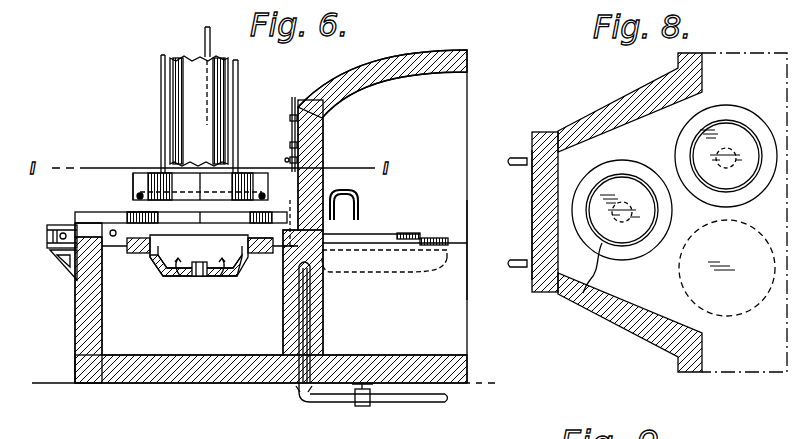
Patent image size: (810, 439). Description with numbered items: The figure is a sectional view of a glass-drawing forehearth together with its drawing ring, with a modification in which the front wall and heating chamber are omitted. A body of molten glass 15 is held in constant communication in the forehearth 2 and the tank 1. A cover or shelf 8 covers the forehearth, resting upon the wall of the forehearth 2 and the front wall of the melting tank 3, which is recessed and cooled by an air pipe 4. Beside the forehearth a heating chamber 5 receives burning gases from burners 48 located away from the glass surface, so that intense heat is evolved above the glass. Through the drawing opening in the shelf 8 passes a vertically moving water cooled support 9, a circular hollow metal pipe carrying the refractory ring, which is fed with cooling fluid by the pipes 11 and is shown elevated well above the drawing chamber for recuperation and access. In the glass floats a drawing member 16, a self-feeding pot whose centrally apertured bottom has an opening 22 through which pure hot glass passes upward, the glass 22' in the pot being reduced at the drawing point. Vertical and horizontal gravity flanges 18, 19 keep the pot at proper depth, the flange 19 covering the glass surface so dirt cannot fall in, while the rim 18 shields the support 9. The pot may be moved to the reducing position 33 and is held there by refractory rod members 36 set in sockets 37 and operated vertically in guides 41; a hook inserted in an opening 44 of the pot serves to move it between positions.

In FIG. 6, the tank 1 is at (462, 318).
In FIG. 6, the body of molten glass 15 is at (460, 292).
In FIG. 6, the forehearth 2 is at (110, 330).
In FIG. 6, the cover or shelf 8 is at (85, 212).
In FIG. 6, the burner 48 is at (63, 225).
In FIG. 6, the heating chamber 5 is at (53, 250).
In FIG. 6, the water cooled support 9 is at (266, 192).
In FIG. 6, the support 11 is at (240, 77).
In FIG. 6, the socket 37 is at (292, 145).
In FIG. 6, the guide 41 is at (292, 118).
In FIG. 6, the rod member 36 is at (325, 160).
In FIG. 6, the reducing position 33 is at (420, 235).
In FIG. 6, the vertical gravity flange 18 is at (150, 255).
In FIG. 8, the vertical gravity flange 18 is at (660, 148).
In FIG. 6, the glass in pot 22' is at (159, 290).
In FIG. 6, the opening 22 is at (213, 290).
In FIG. 6, the horizontal gravity flange 19 is at (266, 256).
In FIG. 8, the horizontal gravity flange 19 is at (628, 258).
In FIG. 6, the front wall of the melting tank 3 is at (315, 322).
In FIG. 6, the air pipe 4 is at (298, 392).
In FIG. 8, the drawing member 16 is at (581, 298).
In FIG. 8, the opening 44 is at (532, 215).